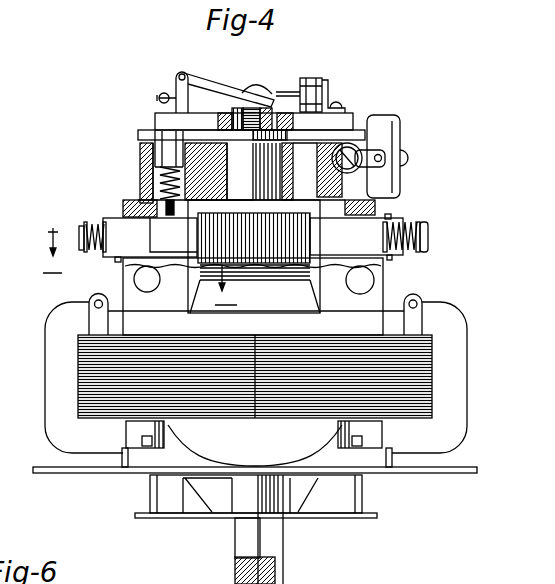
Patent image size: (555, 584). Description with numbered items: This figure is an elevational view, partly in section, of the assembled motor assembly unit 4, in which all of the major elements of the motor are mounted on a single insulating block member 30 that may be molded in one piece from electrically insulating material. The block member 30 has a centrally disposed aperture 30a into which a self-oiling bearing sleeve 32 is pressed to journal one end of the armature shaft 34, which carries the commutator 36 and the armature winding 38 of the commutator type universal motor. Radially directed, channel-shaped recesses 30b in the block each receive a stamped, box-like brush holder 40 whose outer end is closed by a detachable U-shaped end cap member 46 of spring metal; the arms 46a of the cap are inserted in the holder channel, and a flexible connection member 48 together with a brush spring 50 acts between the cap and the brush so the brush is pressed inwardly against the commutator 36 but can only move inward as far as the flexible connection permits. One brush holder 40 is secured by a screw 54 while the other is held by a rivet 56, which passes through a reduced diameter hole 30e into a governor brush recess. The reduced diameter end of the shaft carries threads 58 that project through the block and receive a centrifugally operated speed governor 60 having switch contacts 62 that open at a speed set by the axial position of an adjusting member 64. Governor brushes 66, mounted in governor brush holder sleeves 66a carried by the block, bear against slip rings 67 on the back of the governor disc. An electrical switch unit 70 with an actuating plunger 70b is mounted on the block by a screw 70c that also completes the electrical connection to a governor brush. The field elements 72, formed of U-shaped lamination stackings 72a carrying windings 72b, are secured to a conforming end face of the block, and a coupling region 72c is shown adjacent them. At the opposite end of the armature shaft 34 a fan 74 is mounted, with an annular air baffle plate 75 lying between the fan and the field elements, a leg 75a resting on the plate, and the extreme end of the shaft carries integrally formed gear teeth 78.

The motor assembly unit 4 is at (389, 286).
The insulating block member 30 is at (136, 159).
The centrally disposed aperture 30a is at (224, 178).
The recesses 30b is at (320, 336).
The reduced diameter hole 30e is at (168, 219).
The bearing sleeve 32 is at (230, 196).
The armature shaft 34 is at (284, 538).
The commutator 36 is at (316, 260).
The armature winding 38 is at (320, 286).
The brush holder 40 is at (117, 263).
The end cap member 46 is at (87, 218).
The arms of end cap 46a is at (105, 223).
The flexible connection member 48 is at (82, 236).
The brush spring 50 is at (88, 249).
The screw 54 is at (322, 225).
The rivet 56 is at (162, 214).
The threads 58 is at (262, 97).
The speed governor 60 is at (353, 112).
The switch contacts 62 is at (318, 84).
The adjusting member 64 is at (238, 84).
The governor brushes 66 is at (156, 134).
The governor brush holder sleeves 66a is at (165, 136).
The slip rings 67 is at (157, 128).
The electrical switch unit 70 is at (403, 121).
The actuating plunger 70b is at (410, 160).
The screw 70c is at (352, 166).
The field elements 72 is at (470, 355).
The lamination stackings 72a is at (280, 336).
The windings 72b is at (45, 400).
The bearing cap 72c is at (382, 432).
The fan 74 is at (363, 497).
The annular air baffle plate 75 is at (466, 473).
The leg 75a is at (122, 461).
The gear teeth 78 is at (284, 575).